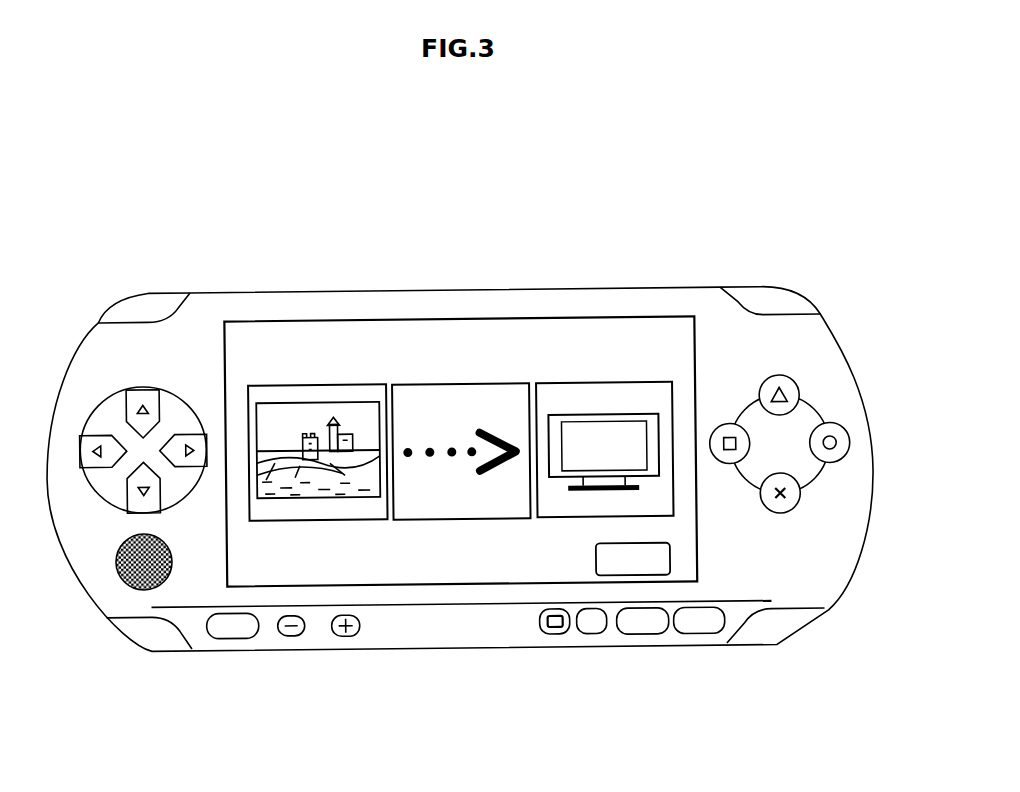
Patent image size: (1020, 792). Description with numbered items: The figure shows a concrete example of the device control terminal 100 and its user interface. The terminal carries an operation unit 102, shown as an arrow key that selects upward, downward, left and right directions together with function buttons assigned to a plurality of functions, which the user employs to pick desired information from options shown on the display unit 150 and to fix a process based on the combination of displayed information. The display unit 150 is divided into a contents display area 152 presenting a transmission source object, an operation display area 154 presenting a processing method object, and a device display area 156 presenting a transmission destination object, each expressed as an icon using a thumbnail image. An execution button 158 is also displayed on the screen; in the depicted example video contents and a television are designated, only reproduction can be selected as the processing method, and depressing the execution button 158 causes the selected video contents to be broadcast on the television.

The device control terminal 100 is at (460, 289).
The operation unit 102 is at (100, 395).
The display unit 150 is at (424, 560).
The contents display area 152 is at (309, 383).
The operation display area 154 is at (490, 523).
The device display area 156 is at (606, 385).
The execution button 158 is at (668, 562).